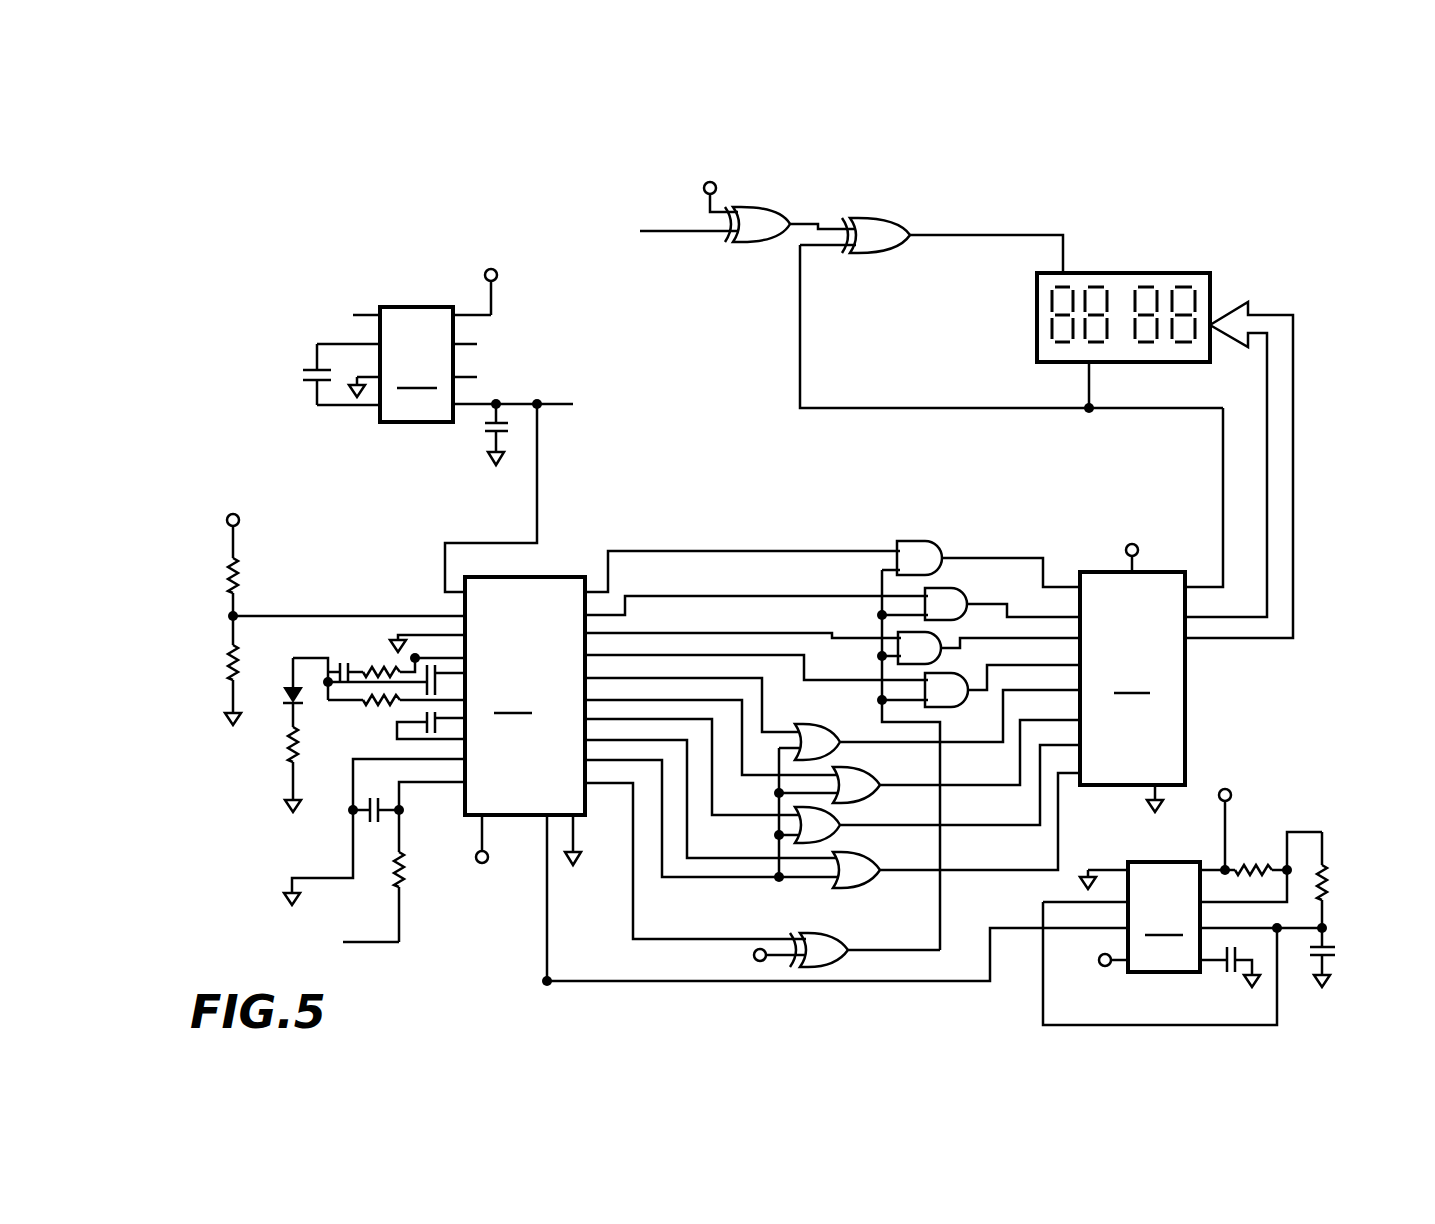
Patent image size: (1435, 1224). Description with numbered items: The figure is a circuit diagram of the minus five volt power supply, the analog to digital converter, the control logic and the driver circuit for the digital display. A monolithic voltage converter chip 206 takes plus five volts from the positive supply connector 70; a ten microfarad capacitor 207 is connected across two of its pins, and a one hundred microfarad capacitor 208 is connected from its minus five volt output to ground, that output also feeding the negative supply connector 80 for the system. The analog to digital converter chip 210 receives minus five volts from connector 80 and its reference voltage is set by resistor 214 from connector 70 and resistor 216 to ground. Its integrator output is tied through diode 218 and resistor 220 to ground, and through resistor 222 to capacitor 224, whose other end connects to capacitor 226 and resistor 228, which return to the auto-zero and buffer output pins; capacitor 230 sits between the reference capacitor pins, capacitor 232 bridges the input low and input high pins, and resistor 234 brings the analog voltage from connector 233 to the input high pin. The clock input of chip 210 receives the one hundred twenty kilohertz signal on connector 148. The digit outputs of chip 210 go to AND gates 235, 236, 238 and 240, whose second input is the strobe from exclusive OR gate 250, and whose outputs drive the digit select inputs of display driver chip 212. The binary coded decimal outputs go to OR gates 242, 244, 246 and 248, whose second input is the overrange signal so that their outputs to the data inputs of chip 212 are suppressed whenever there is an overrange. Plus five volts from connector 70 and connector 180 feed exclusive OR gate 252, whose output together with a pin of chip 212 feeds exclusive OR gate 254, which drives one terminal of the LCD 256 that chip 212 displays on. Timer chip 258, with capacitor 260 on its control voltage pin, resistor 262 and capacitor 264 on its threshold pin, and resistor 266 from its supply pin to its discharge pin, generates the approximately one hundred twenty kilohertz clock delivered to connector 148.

The plus 5 volt connector 70 is at (486, 271).
The minus 5 volt connector 80 is at (563, 397).
The 120 kilohertz clock connector 148 is at (505, 988).
The connector from chip 178 180 is at (626, 224).
The monolithic voltage converter chip 206 is at (445, 351).
The capacitor 207 is at (302, 376).
The capacitor 208 is at (483, 431).
The analog to digital converter chip 210 is at (553, 703).
The four digit display driver chip 212 is at (1129, 669).
The resistor 214 is at (226, 578).
The resistor 216 is at (226, 667).
The diode 218 is at (284, 692).
The resistor 220 is at (286, 748).
The resistor 222 is at (375, 666).
The capacitor 224 is at (336, 666).
The capacitor 226 is at (431, 663).
The resistor 228 is at (372, 706).
The capacitor 230 is at (397, 736).
The capacitor 232 is at (374, 826).
The connector 233 is at (342, 949).
The resistor 234 is at (404, 880).
The AND gate 235 is at (938, 548).
The AND gate 236 is at (963, 594).
The AND gate 238 is at (945, 640).
The AND gate 240 is at (952, 674).
The OR gate 242 is at (814, 724).
The OR gate 244 is at (862, 773).
The OR gate 246 is at (842, 815).
The OR gate 248 is at (868, 857).
The exclusive OR gate 250 is at (836, 940).
The exclusive OR gate 252 is at (768, 218).
The exclusive OR gate 254 is at (900, 228).
The LCD 256 is at (1155, 273).
The timer chip 258 is at (1160, 938).
The capacitor 260 is at (1232, 972).
The resistor 262 is at (1328, 883).
The capacitor 264 is at (1338, 951).
The resistor 266 is at (1252, 862).